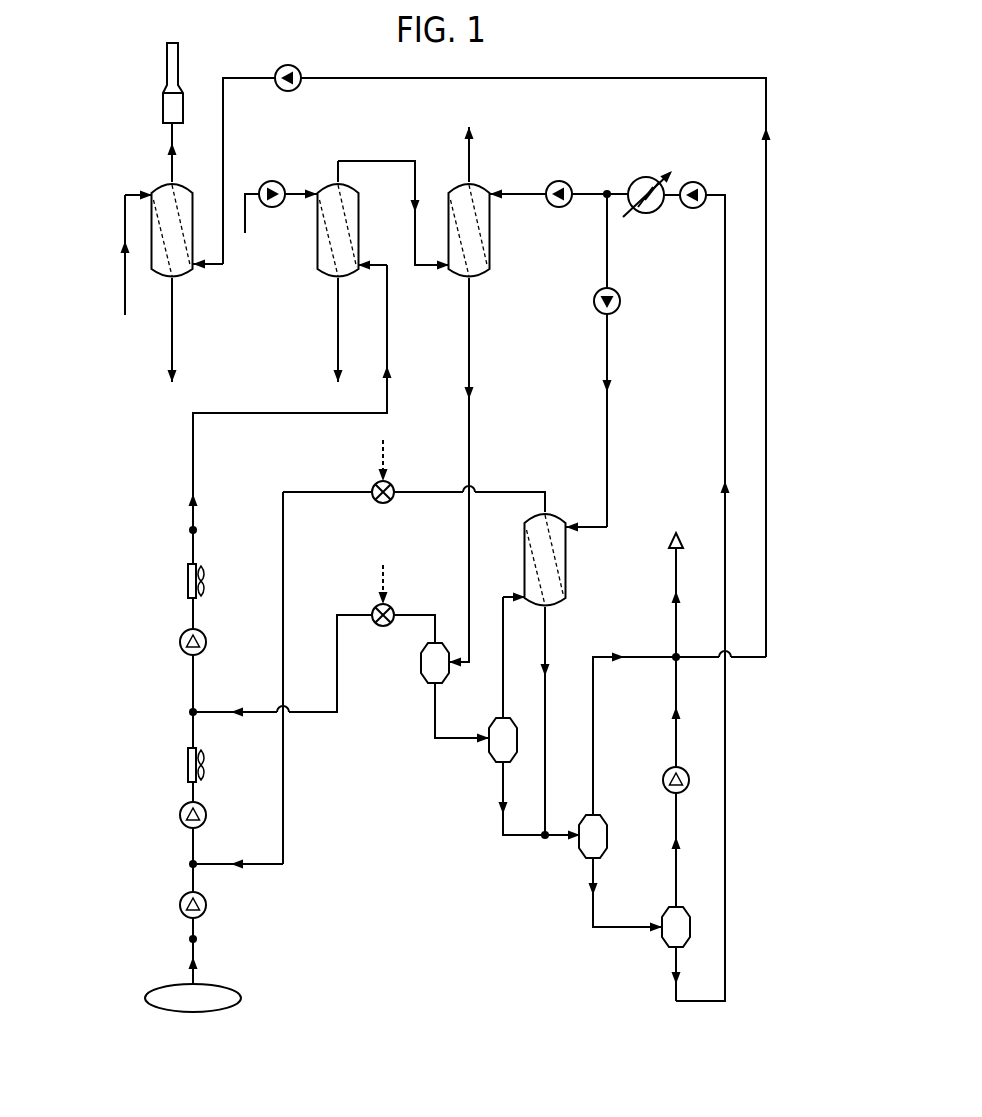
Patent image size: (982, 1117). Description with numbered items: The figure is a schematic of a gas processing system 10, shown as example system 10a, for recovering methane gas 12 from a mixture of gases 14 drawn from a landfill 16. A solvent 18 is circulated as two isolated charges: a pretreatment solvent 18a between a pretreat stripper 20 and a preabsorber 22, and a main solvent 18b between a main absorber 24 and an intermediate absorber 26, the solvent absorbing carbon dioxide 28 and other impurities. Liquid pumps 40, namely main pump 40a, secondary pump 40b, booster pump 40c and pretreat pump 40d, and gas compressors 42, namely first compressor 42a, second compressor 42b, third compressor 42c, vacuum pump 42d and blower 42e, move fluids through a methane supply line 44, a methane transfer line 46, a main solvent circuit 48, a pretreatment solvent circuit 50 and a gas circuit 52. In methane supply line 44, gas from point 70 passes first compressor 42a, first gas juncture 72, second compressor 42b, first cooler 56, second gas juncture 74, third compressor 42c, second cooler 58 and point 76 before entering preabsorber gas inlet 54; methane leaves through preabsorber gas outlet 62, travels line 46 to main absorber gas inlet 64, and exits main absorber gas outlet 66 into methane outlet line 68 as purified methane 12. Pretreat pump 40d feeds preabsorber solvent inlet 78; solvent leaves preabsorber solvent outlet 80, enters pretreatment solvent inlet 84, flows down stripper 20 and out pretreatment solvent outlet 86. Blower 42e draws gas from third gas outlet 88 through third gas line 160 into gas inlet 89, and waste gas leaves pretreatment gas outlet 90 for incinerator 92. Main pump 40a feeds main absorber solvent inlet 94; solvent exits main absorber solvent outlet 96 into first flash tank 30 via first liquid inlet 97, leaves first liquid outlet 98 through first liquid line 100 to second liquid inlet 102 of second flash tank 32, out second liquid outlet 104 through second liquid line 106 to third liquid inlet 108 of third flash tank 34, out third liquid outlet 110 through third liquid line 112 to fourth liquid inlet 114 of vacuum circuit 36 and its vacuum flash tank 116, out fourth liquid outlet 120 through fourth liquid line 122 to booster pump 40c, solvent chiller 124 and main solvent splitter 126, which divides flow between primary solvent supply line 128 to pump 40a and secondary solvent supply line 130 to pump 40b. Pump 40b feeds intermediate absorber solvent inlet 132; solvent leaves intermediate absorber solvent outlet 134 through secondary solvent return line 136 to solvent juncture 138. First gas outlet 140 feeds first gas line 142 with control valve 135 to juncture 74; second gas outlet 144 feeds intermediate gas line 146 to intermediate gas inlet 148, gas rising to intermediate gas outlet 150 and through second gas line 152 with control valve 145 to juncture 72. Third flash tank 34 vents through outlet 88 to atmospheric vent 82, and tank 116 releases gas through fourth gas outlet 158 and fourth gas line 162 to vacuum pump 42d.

The gas processing system 10 is at (649, 57).
The gas processing system 10a is at (729, 58).
The methane gas 12 is at (474, 131).
The mixture of gases 14 is at (392, 372).
The landfill 16 is at (222, 985).
The solvent 18 is at (472, 396).
The pretreatment solvent 18a is at (122, 247).
The main solvent 18b is at (466, 395).
The pretreat stripper 20 is at (193, 207).
The preabsorber 22 is at (317, 255).
The main absorber 24 is at (491, 250).
The intermediate absorber 26 is at (567, 575).
The carbon dioxide 28 is at (670, 596).
The first flash tank 30 is at (421, 660).
The second flash tank 32 is at (494, 718).
The third flash tank 34 is at (585, 815).
The vacuum circuit 36 is at (630, 963).
The liquid pumps 40 is at (702, 183).
The main pump 40a is at (554, 181).
The secondary pump 40b is at (597, 303).
The booster pump 40c is at (693, 208).
The pretreat pump 40d is at (262, 184).
The gas compressors 42 is at (298, 89).
The first compressor 42a is at (179, 905).
The second compressor 42b is at (179, 816).
The third compressor 42c is at (179, 642).
The vacuum pump 42d is at (662, 780).
The blower 42e is at (284, 91).
The methane supply line 44 is at (237, 414).
The methane transfer line 46 is at (392, 160).
The main solvent circuit 48 is at (742, 768).
The pretreatment solvent circuit 50 is at (122, 316).
The gas circuit 52 is at (600, 80).
The preabsorber gas inlet 54 is at (360, 258).
The first cooler 56 is at (187, 765).
The second cooler 58 is at (187, 581).
The preabsorber gas outlet 62 is at (337, 183).
The main absorber gas inlet 64 is at (455, 270).
The main absorber gas outlet 66 is at (467, 183).
The methane outlet line 68 is at (472, 156).
The point of methane supply line 70 is at (188, 938).
The first gas juncture 72 is at (188, 865).
The second gas juncture 74 is at (188, 712).
The point of methane supply line 76 is at (188, 530).
The preabsorber solvent inlet 78 is at (315, 203).
The preabsorber solvent outlet 80 is at (336, 281).
The atmospheric vent 82 is at (668, 541).
The pretreatment solvent inlet 84 is at (150, 192).
The pretreatment solvent outlet 86 is at (170, 281).
The third gas outlet 88 is at (600, 814).
The gas inlet 89 is at (193, 271).
The pretreatment gas outlet 90 is at (170, 182).
The incinerator 92 is at (163, 110).
The main absorber solvent inlet 94 is at (493, 199).
The main absorber solvent outlet 96 is at (472, 277).
The first liquid inlet 97 is at (451, 668).
The first liquid outlet 98 is at (429, 684).
The first liquid line 100 is at (432, 728).
The second liquid inlet 102 is at (490, 754).
The second liquid outlet 104 is at (502, 770).
The second liquid line 106 is at (520, 842).
The third liquid inlet 108 is at (578, 838).
The third liquid outlet 110 is at (584, 862).
The third liquid line 112 is at (600, 930).
The fourth liquid inlet 114 is at (652, 912).
The vacuum flash tank 116 is at (692, 925).
The fourth liquid outlet 120 is at (674, 950).
The fourth liquid line 122 is at (727, 925).
The solvent chiller 124 is at (640, 177).
The main solvent splitter 126 is at (603, 198).
The primary solvent supply line 128 is at (584, 192).
The secondary solvent supply line 130 is at (609, 267).
The intermediate absorber solvent inlet 132 is at (568, 523).
The intermediate absorber solvent outlet 134 is at (548, 606).
The control valve 135 is at (372, 610).
The secondary solvent return line 136 is at (548, 751).
The solvent juncture 138 is at (545, 840).
The first gas outlet 140 is at (440, 613).
The first gas line 142 is at (335, 690).
The second gas outlet 144 is at (506, 711).
The control valve 145 is at (372, 483).
The intermediate gas line 146 is at (490, 597).
The intermediate gas inlet 148 is at (521, 592).
The intermediate gas outlet 150 is at (545, 510).
The second gas line 152 is at (284, 570).
The fourth gas outlet 158 is at (680, 906).
The third gas line 160 is at (594, 742).
The fourth gas line 162 is at (680, 811).